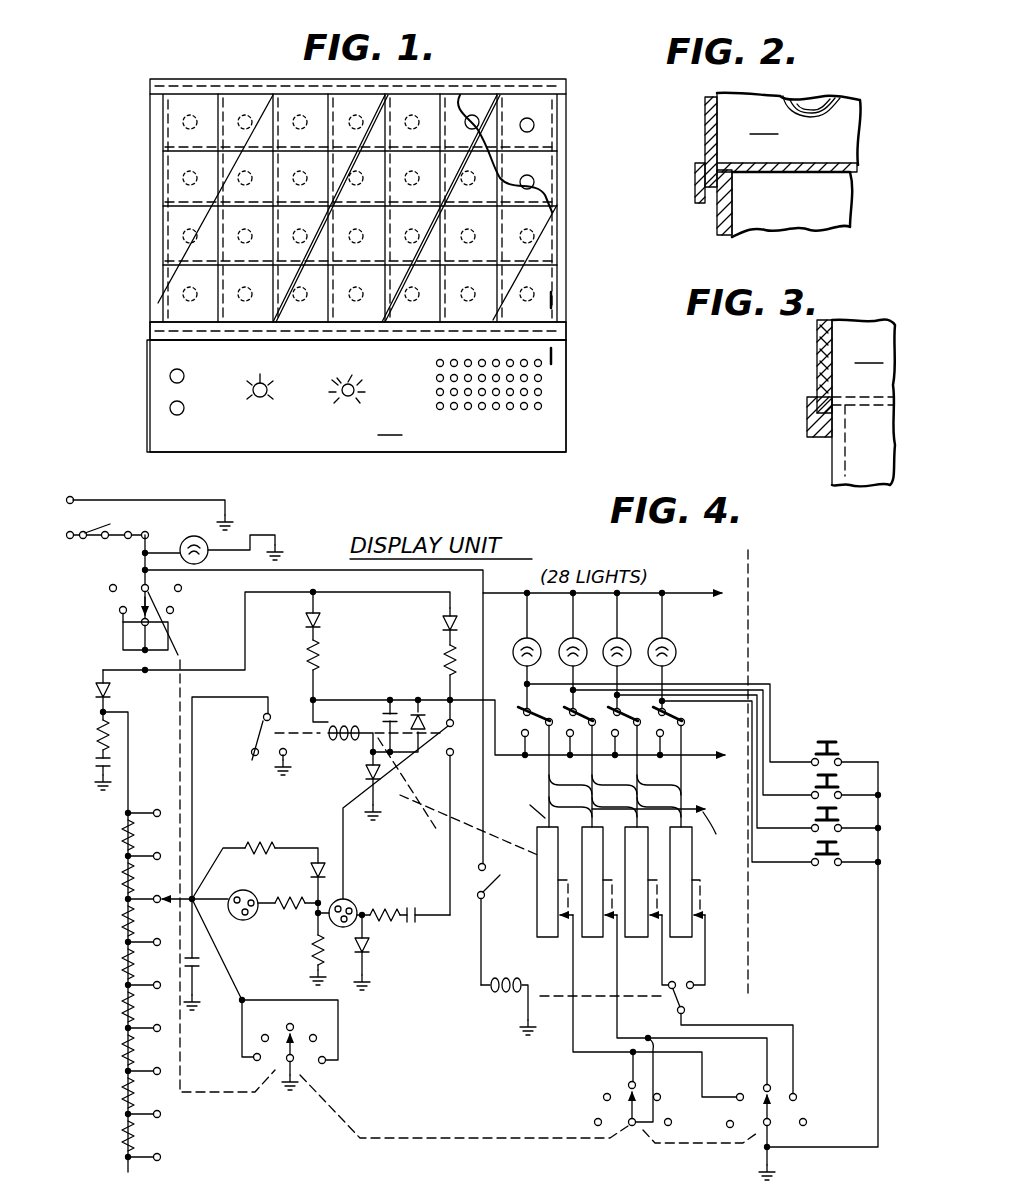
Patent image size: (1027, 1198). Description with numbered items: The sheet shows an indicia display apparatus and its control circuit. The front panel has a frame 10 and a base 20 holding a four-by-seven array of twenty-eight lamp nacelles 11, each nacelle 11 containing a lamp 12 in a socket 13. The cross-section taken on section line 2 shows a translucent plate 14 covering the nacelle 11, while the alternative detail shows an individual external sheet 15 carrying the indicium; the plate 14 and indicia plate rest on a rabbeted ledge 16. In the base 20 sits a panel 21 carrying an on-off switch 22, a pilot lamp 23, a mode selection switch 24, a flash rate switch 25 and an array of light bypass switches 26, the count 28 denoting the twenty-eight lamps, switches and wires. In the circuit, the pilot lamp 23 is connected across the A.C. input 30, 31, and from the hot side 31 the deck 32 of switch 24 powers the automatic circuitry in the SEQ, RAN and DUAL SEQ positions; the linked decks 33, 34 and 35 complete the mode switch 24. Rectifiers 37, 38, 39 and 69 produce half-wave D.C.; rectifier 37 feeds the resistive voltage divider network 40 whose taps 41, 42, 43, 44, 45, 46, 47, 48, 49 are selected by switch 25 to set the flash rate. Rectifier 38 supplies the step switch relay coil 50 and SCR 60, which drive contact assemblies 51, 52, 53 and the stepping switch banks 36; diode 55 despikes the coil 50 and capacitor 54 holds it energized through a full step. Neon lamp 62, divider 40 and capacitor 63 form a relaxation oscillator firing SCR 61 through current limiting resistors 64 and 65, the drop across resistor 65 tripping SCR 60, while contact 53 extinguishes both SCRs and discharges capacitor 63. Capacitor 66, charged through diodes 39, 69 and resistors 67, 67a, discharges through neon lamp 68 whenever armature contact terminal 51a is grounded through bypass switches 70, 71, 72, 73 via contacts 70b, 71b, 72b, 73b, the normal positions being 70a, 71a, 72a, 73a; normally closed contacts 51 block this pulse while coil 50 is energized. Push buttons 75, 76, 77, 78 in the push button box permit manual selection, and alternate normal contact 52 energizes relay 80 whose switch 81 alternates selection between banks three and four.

In FIG. 1, the frame 10 is at (228, 79).
In FIG. 1, the lamp nacelle 11 is at (542, 140).
In FIG. 2, the lamp nacelle 11 is at (789, 165).
In FIG. 3, the lamp nacelle 11 is at (863, 402).
In FIG. 1, the lamp 12 is at (478, 112).
In FIG. 2, the lamp 12 is at (820, 105).
In FIG. 4, the lamp 12 is at (552, 632).
In FIG. 2, the socket 13 is at (856, 126).
In FIG. 2, the translucent plate 14 is at (705, 137).
In FIG. 3, the translucent plate 14 is at (832, 345).
In FIG. 3, the external sheet 15 is at (815, 362).
In FIG. 1, the rabbeted ledge 16 is at (152, 332).
In FIG. 2, the rabbeted ledge 16 is at (695, 192).
In FIG. 3, the rabbeted ledge 16 is at (807, 420).
In FIG. 1, the section line 2— 2 is at (556, 300).
In FIG. 1, the base 20 is at (570, 428).
In FIG. 1, the panel 21 is at (367, 424).
In FIG. 1, the on-off switch 22 is at (168, 408).
In FIG. 1, the pilot lamp 23 is at (168, 376).
In FIG. 4, the pilot lamp 23 is at (206, 543).
In FIG. 1, the mode selection switch 24 is at (258, 398).
In FIG. 4, the mode selection switch 24 is at (180, 748).
In FIG. 1, the flash rate switch 25 is at (356, 386).
In FIG. 4, the flash rate switch 25 is at (198, 870).
In FIG. 1, the light bypass switches 26 is at (535, 392).
In FIG. 4, the twenty-eight lamp nacelles / switches / lights 28 is at (682, 765).
In FIG. 4, the A.C. input 30 is at (76, 497).
In FIG. 4, the hot side of A.C. input 31 is at (70, 540).
In FIG. 4, the switch deck 32 is at (121, 628).
In FIG. 4, the switch deck 33 is at (327, 1055).
In FIG. 4, the switch deck 34 is at (598, 1083).
In FIG. 4, the switch deck 35 is at (806, 1082).
In FIG. 4, the banks 36 is at (614, 882).
In FIG. 4, the rectifier 37 is at (112, 692).
In FIG. 4, the rectifier 38 is at (322, 619).
In FIG. 4, the rectifier 39 is at (442, 620).
In FIG. 4, the resistive voltage divider network 40 is at (116, 897).
In FIG. 4, the divider tap 41 is at (170, 800).
In FIG. 4, the divider tap 42 is at (170, 843).
In FIG. 4, the divider tap 43 is at (170, 886).
In FIG. 4, the divider tap 44 is at (170, 929).
In FIG. 4, the divider tap 45 is at (170, 972).
In FIG. 4, the divider tap 46 is at (170, 1015).
In FIG. 4, the divider tap 47 is at (170, 1058).
In FIG. 4, the divider tap 48 is at (170, 1101).
In FIG. 4, the divider tap 49 is at (170, 1144).
In FIG. 4, the step switch relay coil 50 is at (338, 740).
In FIG. 4, the normally closed contacts 51 is at (454, 755).
In FIG. 4, the armature contact terminal 51a is at (397, 798).
In FIG. 4, the alternate normal contact 52 is at (500, 875).
In FIG. 4, the contact 53 is at (262, 733).
In FIG. 4, the capacitor 54 is at (383, 710).
In FIG. 4, the diode 55 is at (427, 706).
In FIG. 4, the SCR 60 is at (362, 773).
In FIG. 4, the SCR 61 is at (310, 875).
In FIG. 4, the neon lamp 62 is at (250, 891).
In FIG. 4, the capacitor 63 is at (200, 972).
In FIG. 4, the resistor 64 is at (244, 848).
In FIG. 4, the resistor 65 is at (308, 955).
In FIG. 4, the capacitor 66 is at (408, 925).
In FIG. 4, the resistor 67 is at (380, 905).
In FIG. 4, the resistor 67a is at (442, 650).
In FIG. 4, the neon lamp 68 is at (348, 899).
In FIG. 4, the rectifier 69 is at (368, 962).
In FIG. 4, the bypass switch 70 is at (523, 716).
In FIG. 4, the bypass switch normal position 70a is at (524, 706).
In FIG. 4, the bypass switch ground contact 70b is at (524, 746).
In FIG. 4, the bypass switch 71 is at (590, 720).
In FIG. 4, the bypass switch normal position 71a is at (571, 708).
In FIG. 4, the bypass switch ground contact 71b is at (569, 746).
In FIG. 4, the bypass switch 72 is at (622, 712).
In FIG. 4, the bypass switch normal position 72a is at (617, 705).
In FIG. 4, the bypass switch ground contact 72b is at (614, 746).
In FIG. 4, the bypass switch 73 is at (680, 720).
In FIG. 4, the bypass switch normal position 73a is at (667, 708).
In FIG. 4, the bypass switch ground contact 73b is at (660, 746).
In FIG. 4, the push button 75 is at (848, 757).
In FIG. 4, the push button 76 is at (848, 790).
In FIG. 4, the push button 77 is at (848, 823).
In FIG. 4, the push button 78 is at (848, 857).
In FIG. 4, the relay 80 is at (505, 998).
In FIG. 4, the switch 81 is at (686, 1000).